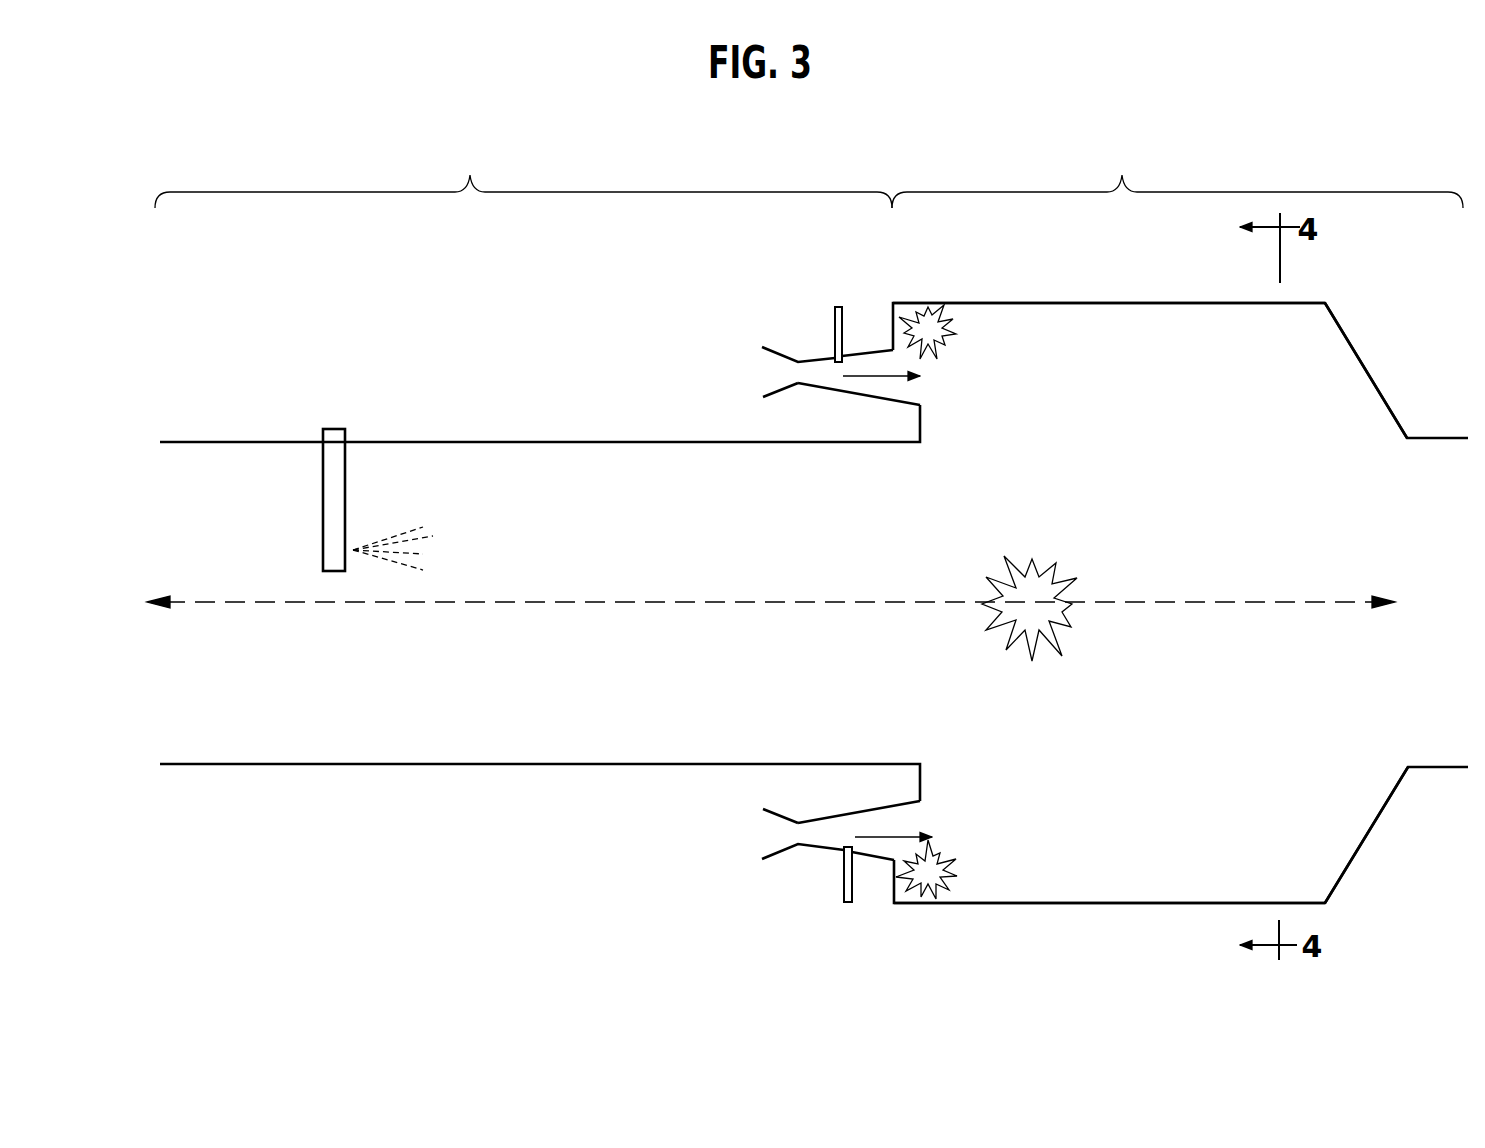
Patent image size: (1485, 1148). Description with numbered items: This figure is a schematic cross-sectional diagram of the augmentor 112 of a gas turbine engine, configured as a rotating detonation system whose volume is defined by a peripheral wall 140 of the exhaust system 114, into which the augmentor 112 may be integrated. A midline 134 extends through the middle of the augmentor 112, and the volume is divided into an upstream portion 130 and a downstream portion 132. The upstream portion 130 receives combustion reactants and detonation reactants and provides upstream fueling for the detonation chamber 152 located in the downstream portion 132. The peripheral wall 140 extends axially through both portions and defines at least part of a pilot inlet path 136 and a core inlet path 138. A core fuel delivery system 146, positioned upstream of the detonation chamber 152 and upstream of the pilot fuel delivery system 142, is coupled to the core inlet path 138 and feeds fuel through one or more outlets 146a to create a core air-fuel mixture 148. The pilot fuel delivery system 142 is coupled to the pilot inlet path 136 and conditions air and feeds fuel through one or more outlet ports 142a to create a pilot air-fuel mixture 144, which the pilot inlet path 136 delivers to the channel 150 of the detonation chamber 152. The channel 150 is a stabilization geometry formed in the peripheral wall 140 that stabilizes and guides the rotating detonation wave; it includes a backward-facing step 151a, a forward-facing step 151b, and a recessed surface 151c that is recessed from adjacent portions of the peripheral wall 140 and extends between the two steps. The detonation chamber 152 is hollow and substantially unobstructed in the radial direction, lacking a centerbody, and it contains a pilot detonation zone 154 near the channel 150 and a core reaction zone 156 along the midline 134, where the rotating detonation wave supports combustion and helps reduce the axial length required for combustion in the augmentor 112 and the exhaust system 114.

The augmentor 112 is at (892, 142).
The exhaust system 114 is at (1399, 664).
The upstream portion 130 is at (470, 174).
The downstream portion 132 is at (1122, 176).
The midline 134 is at (1263, 601).
The pilot inlet path 136 is at (845, 395).
The core inlet path 138 is at (222, 708).
The peripheral wall 140 is at (513, 445).
The pilot fuel delivery system 142 is at (833, 310).
The outlet ports 142a is at (831, 355).
The pilot air-fuel mixture 144 is at (887, 596).
The core fuel delivery system 146 is at (323, 433).
The outlets 146a is at (355, 551).
The core air-fuel mixture 148 is at (380, 563).
The channel 150 is at (1122, 290).
The backward-facing step 151a is at (921, 425).
The forward-facing step 151b is at (1363, 371).
The recessed surface 151c is at (1003, 302).
The detonation chamber 152 is at (1184, 696).
The pilot detonation zone 154 is at (936, 346).
The core reaction zone 156 is at (1073, 590).